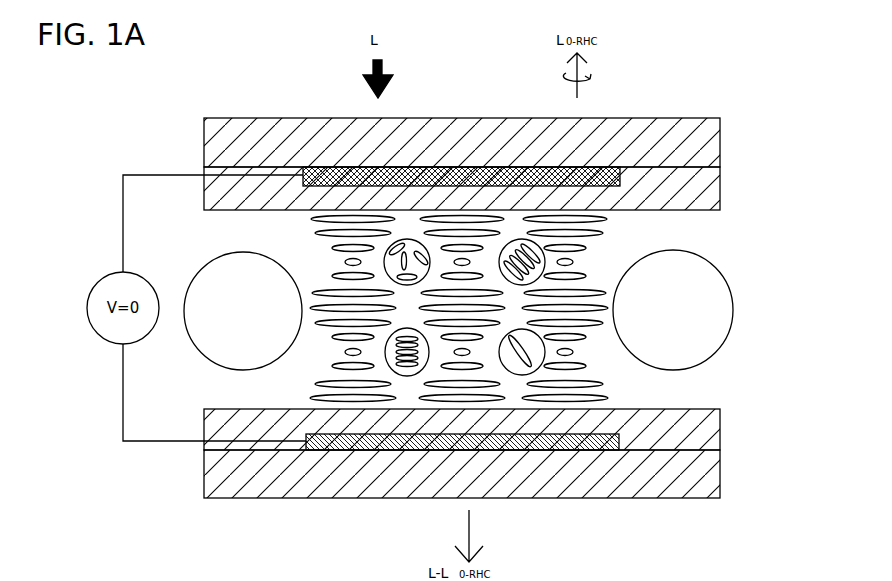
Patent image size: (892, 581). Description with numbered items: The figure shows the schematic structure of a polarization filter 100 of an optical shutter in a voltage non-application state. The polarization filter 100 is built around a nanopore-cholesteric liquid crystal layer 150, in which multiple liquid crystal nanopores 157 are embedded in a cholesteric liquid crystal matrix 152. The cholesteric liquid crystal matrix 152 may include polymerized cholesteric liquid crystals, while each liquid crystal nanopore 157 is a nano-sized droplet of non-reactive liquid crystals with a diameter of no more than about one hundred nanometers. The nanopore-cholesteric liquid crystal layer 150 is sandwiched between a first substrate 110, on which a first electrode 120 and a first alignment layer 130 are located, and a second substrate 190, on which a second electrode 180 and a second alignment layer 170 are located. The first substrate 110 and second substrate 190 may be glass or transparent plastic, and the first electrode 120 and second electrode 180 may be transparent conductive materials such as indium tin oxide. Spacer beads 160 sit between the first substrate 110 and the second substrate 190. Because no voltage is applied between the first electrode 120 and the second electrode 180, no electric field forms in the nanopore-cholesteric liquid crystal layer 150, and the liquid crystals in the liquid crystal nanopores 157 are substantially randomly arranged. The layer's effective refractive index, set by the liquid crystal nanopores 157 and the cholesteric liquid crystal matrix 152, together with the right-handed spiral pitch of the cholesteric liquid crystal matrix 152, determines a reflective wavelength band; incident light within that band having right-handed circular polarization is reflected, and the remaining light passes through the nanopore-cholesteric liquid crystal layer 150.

The polarization filter 100 is at (706, 91).
The first substrate 110 is at (712, 479).
The first electrode 120 is at (607, 445).
The first alignment layer 130 is at (712, 425).
The nanopore-cholesteric liquid crystal layer 150 is at (178, 215).
The cholesteric liquid crystal matrix 152 is at (326, 267).
The liquid crystal nanopores 157 is at (374, 259).
The spacer beads 160 is at (713, 311).
The second alignment layer 170 is at (717, 187).
The second electrode 180 is at (607, 173).
The second substrate 190 is at (717, 135).